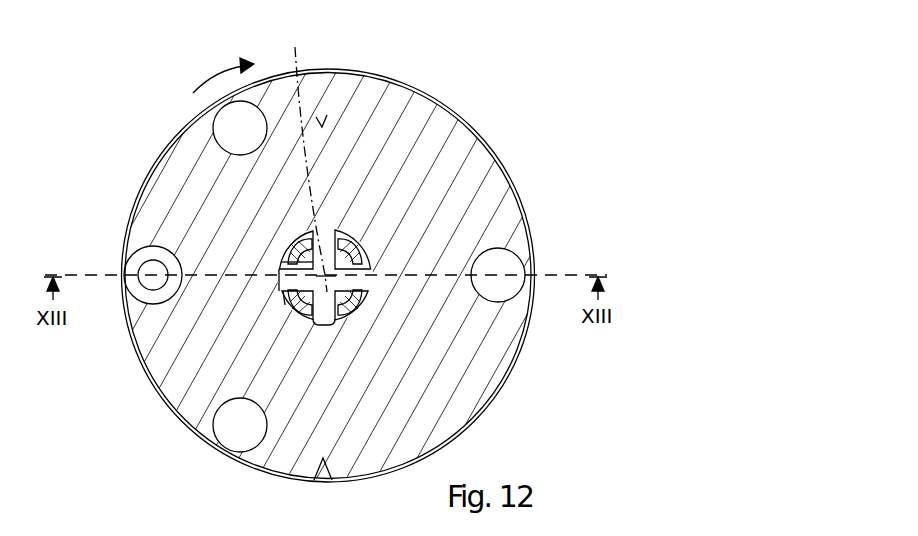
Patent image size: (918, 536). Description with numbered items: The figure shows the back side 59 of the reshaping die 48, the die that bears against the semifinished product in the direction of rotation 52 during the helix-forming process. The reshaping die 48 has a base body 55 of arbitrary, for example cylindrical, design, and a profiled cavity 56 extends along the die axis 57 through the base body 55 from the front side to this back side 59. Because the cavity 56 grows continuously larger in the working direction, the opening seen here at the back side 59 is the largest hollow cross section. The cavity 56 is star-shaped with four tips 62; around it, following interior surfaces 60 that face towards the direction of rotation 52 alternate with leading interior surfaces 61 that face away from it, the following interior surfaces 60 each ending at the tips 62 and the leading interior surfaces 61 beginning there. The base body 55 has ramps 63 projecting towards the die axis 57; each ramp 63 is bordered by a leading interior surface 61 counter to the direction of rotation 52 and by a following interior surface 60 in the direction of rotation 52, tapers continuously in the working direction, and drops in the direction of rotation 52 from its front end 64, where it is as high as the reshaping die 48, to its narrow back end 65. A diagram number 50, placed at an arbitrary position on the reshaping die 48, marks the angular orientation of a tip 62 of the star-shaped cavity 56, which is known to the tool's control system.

The reshaping die 48 is at (116, 81).
The diagram number 50 is at (318, 480).
The direction of rotation 52 is at (220, 73).
The base body 55 is at (365, 183).
The profiled cavity 56 is at (357, 273).
The die axis 57 is at (326, 155).
The back side 59 is at (322, 126).
The following interior surfaces 60 is at (298, 247).
The leading interior surfaces 61 is at (360, 243).
The tips 62 is at (280, 277).
The ramps 63 is at (290, 265).
The front end 64 is at (283, 290).
The back end 65 is at (292, 320).